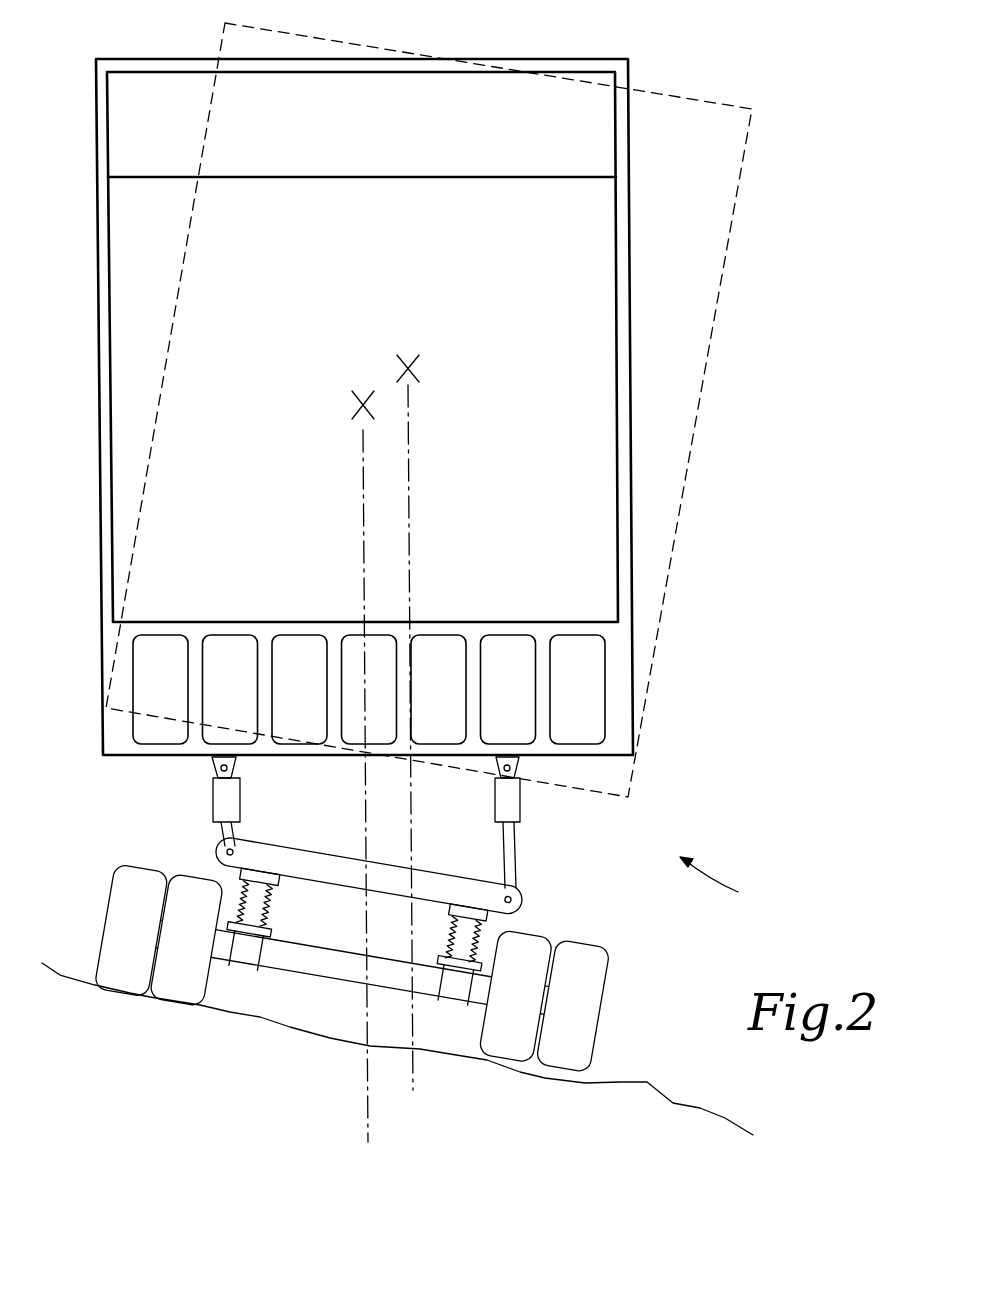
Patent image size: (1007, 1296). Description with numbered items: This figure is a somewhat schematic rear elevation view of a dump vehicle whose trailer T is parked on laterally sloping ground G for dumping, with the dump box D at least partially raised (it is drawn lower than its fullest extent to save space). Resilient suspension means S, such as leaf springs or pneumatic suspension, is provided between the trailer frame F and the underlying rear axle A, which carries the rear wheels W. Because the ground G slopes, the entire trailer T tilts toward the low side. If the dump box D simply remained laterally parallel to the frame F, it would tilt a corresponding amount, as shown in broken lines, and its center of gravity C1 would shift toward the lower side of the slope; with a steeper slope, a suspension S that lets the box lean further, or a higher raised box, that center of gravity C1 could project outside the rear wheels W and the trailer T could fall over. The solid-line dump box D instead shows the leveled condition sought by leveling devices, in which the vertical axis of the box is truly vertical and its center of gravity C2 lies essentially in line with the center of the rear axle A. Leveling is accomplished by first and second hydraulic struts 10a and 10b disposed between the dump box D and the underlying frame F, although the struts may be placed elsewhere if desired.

The first hydraulic strut 10a is at (212, 805).
The second hydraulic strut 10b is at (521, 813).
The trailer frame F is at (329, 850).
The resilient suspension means S is at (272, 905).
The rear axle A is at (326, 980).
The rear wheels W is at (108, 915).
The ground G is at (285, 1030).
The trailer T is at (725, 881).
The dump box D is at (633, 520).
The center of gravity of tilted dump box C1 is at (421, 368).
The center of gravity of leveled dump box C2 is at (351, 406).